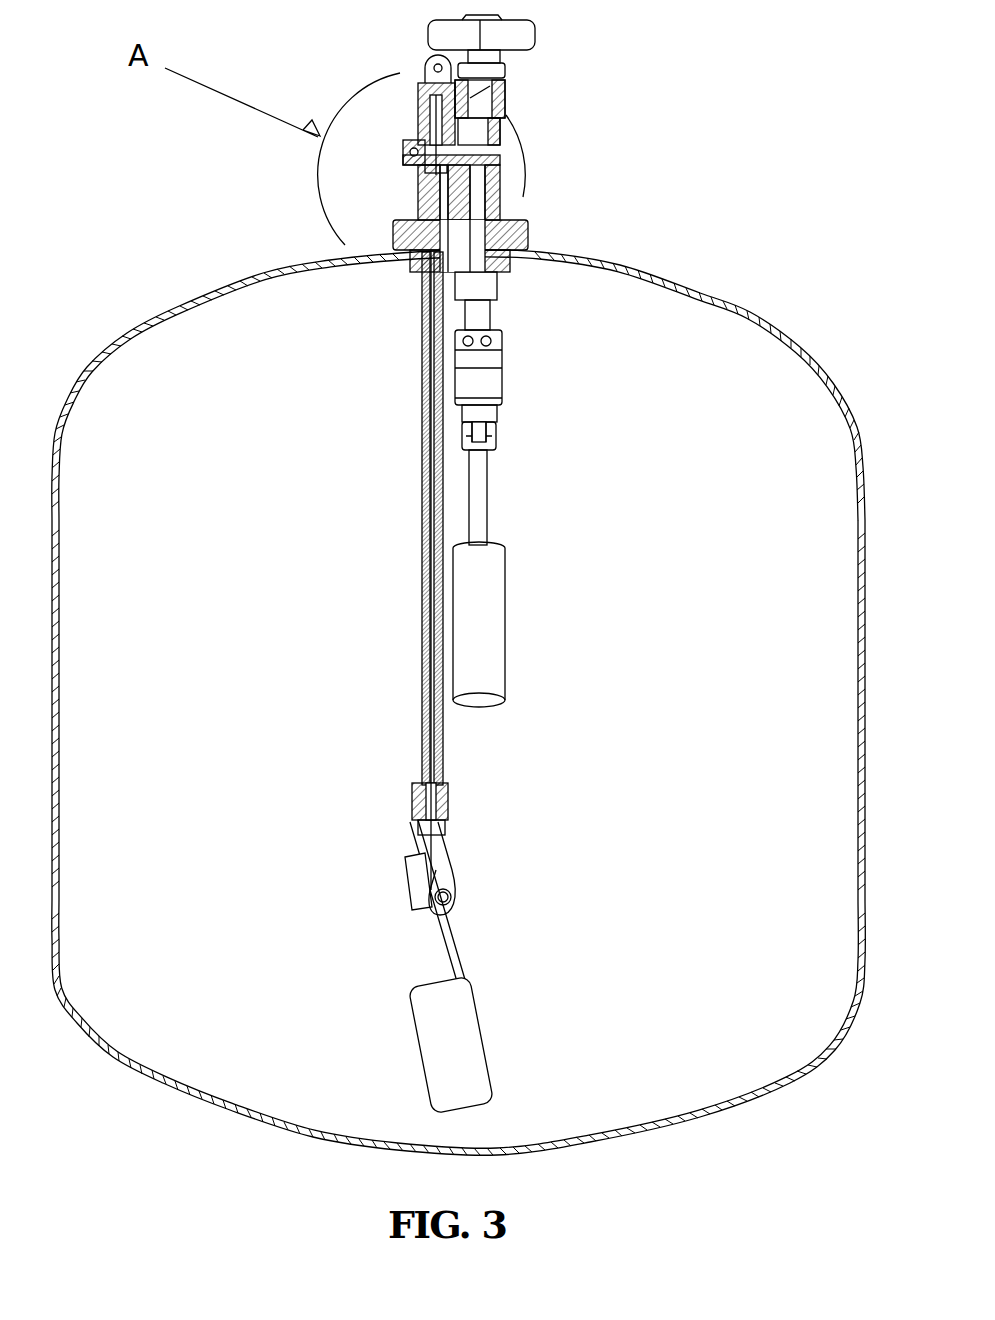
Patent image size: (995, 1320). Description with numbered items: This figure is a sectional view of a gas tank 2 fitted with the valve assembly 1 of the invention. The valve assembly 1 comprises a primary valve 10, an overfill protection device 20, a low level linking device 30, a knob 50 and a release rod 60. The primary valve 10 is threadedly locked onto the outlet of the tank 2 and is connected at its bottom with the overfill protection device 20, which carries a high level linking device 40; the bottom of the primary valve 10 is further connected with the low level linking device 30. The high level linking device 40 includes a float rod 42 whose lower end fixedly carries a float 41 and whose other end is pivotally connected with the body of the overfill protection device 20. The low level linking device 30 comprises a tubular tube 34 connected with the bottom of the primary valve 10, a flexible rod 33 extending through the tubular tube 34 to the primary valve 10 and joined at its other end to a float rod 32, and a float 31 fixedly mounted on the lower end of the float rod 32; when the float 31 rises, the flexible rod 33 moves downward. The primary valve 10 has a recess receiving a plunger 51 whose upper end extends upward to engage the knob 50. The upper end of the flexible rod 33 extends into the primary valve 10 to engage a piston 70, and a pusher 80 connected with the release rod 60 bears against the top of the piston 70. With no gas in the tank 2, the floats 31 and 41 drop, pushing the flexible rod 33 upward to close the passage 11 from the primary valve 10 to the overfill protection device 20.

The valve assembly 1 is at (560, 161).
The tank 2 is at (142, 322).
The primary valve 10 is at (490, 230).
The passage 11 is at (493, 277).
The overfill protection device 20 is at (480, 382).
The low level linking device 30 is at (197, 757).
The float 31 is at (448, 1018).
The float rod 32 is at (430, 940).
The flexible rod 33 is at (423, 797).
The tubular tube 34 is at (425, 715).
The high level linking device 40 is at (622, 500).
The float 41 is at (477, 590).
The float rod 42 is at (477, 505).
The knob 50 is at (522, 42).
The plunger 51 is at (473, 107).
The release rod 60 is at (430, 58).
The piston 70 is at (427, 177).
The pusher 80 is at (428, 128).